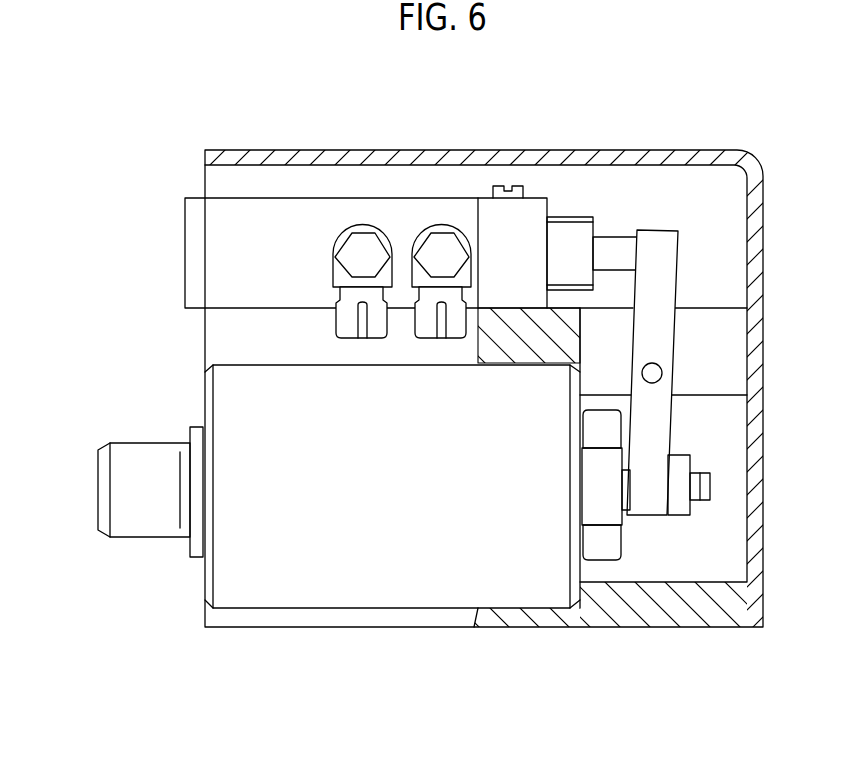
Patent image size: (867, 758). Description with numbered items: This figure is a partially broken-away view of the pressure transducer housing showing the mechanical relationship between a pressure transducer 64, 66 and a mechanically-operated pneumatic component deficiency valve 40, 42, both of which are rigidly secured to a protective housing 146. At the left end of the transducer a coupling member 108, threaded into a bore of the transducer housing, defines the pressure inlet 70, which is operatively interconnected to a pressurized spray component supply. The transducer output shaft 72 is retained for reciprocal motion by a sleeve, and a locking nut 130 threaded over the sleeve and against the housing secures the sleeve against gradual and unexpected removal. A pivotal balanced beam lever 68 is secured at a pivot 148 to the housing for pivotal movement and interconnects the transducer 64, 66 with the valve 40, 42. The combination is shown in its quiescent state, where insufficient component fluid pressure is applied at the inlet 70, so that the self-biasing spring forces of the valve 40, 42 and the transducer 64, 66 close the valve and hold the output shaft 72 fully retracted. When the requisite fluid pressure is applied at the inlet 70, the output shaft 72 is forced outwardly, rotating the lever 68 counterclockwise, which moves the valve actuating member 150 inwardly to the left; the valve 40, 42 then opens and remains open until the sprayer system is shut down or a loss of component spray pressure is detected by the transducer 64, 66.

The protective housing 146 is at (246, 154).
The component deficiency valve 40 is at (366, 221).
The component deficiency valve 42 is at (395, 212).
The valve actuating member 150 is at (610, 245).
The pivotal balanced beam lever 68 is at (658, 245).
The pivot 148 is at (654, 372).
The output shaft 72 is at (622, 510).
The locking nut 130 is at (602, 543).
The pressure transducer 64 is at (392, 521).
The pressure transducer 66 is at (293, 578).
The coupling member 108 is at (142, 532).
The pressure inlet 70 is at (113, 512).